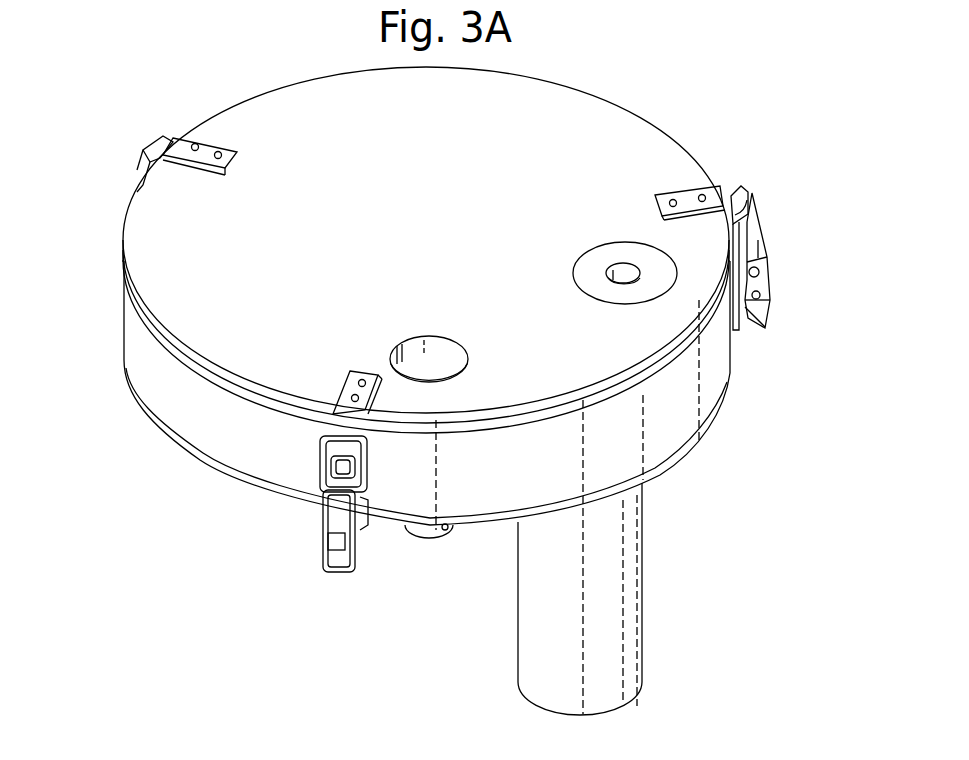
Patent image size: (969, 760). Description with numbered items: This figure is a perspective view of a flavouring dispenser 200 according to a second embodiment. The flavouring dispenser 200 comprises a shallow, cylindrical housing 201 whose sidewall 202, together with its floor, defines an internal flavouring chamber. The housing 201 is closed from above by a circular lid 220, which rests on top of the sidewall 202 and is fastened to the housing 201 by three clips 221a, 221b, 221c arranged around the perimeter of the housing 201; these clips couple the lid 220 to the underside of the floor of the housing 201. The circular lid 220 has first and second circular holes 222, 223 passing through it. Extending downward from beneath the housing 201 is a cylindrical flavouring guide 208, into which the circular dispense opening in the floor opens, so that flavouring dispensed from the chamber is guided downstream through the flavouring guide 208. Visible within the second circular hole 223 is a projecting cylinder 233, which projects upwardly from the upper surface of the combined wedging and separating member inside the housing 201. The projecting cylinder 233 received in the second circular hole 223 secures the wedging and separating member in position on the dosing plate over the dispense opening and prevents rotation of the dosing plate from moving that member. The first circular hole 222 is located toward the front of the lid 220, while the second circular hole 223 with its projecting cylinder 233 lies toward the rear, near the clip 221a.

The flavouring dispenser 200 is at (707, 110).
The housing 201 is at (748, 408).
The sidewall 202 is at (667, 427).
The cylindrical flavouring guide 208 is at (632, 632).
The circular lid 220 is at (192, 281).
The clip 221a is at (755, 247).
The clip 221b is at (332, 558).
The clip 221c is at (145, 171).
The first circular hole 222 is at (421, 370).
The second circular hole 223 is at (620, 236).
The projecting cylinder 233 is at (650, 287).